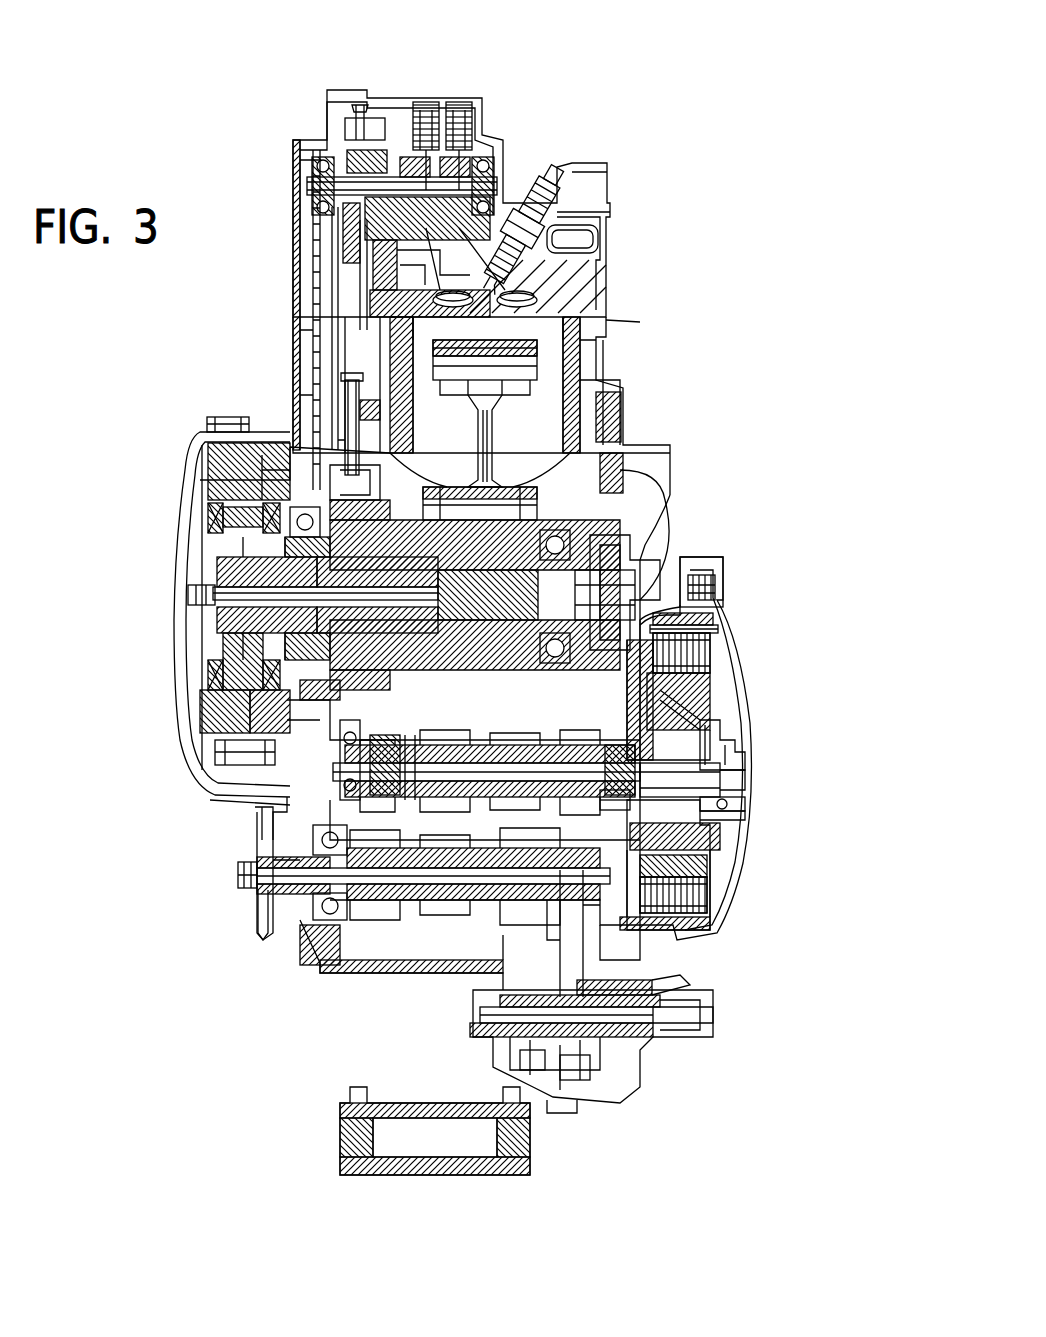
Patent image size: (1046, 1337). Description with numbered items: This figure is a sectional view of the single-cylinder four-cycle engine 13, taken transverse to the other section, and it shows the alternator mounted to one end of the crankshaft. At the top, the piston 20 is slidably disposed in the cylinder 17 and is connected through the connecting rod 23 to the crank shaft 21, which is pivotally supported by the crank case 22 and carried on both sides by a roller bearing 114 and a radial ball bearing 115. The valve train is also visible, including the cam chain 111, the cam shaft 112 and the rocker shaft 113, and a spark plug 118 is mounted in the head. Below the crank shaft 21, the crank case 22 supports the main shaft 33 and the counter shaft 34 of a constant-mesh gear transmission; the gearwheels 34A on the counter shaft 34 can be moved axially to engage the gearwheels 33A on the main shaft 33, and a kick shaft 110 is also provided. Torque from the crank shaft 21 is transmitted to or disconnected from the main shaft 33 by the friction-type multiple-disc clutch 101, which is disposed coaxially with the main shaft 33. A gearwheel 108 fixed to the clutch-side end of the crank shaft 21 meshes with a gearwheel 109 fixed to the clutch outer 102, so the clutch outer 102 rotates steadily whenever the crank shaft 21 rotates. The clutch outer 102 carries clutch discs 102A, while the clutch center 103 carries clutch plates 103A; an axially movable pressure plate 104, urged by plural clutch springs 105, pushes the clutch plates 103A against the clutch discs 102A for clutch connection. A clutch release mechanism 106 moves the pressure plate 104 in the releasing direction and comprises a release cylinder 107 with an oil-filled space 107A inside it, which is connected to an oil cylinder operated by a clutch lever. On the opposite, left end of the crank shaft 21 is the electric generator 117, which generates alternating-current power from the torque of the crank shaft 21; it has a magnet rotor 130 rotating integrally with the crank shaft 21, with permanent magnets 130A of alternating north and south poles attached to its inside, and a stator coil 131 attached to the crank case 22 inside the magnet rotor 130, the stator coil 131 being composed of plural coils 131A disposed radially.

The engine 13 is at (712, 243).
The cylinder 17 is at (608, 355).
The piston 20 is at (605, 321).
The crank shaft 21 is at (214, 432).
The crank case 22 is at (625, 520).
The connecting rod 23 is at (493, 430).
The main shaft 33 is at (350, 765).
The gearwheels 33A is at (372, 790).
The counter shaft 34 is at (313, 923).
The gearwheels 34A is at (298, 870).
The multiple-disc clutch 101 is at (812, 735).
The clutch outer 102 is at (702, 570).
The clutch discs 102A is at (692, 630).
The clutch center 103 is at (702, 706).
The clutch plates 103A is at (720, 660).
The pressure plate 104 is at (748, 815).
The clutch springs 105 is at (712, 876).
The clutch release mechanism 106 is at (748, 786).
The release cylinder 107 is at (752, 771).
The space 107A is at (740, 746).
The gearwheel 108 is at (643, 548).
The gearwheel 109 is at (682, 600).
The kick shaft 110 is at (670, 1040).
The cam chain 111 is at (305, 312).
The cam shaft 112 is at (322, 143).
The rocker shaft 113 is at (452, 100).
The roller bearing 114 is at (342, 475).
The radial ball bearing 115 is at (650, 470).
The electric generator (alternator) 117 is at (108, 748).
The spark plug 118 is at (540, 175).
The magnet rotor 130 is at (200, 770).
The permanent magnets 130A is at (188, 485).
The stator coil 131 is at (200, 740).
The coils 131A is at (205, 513).